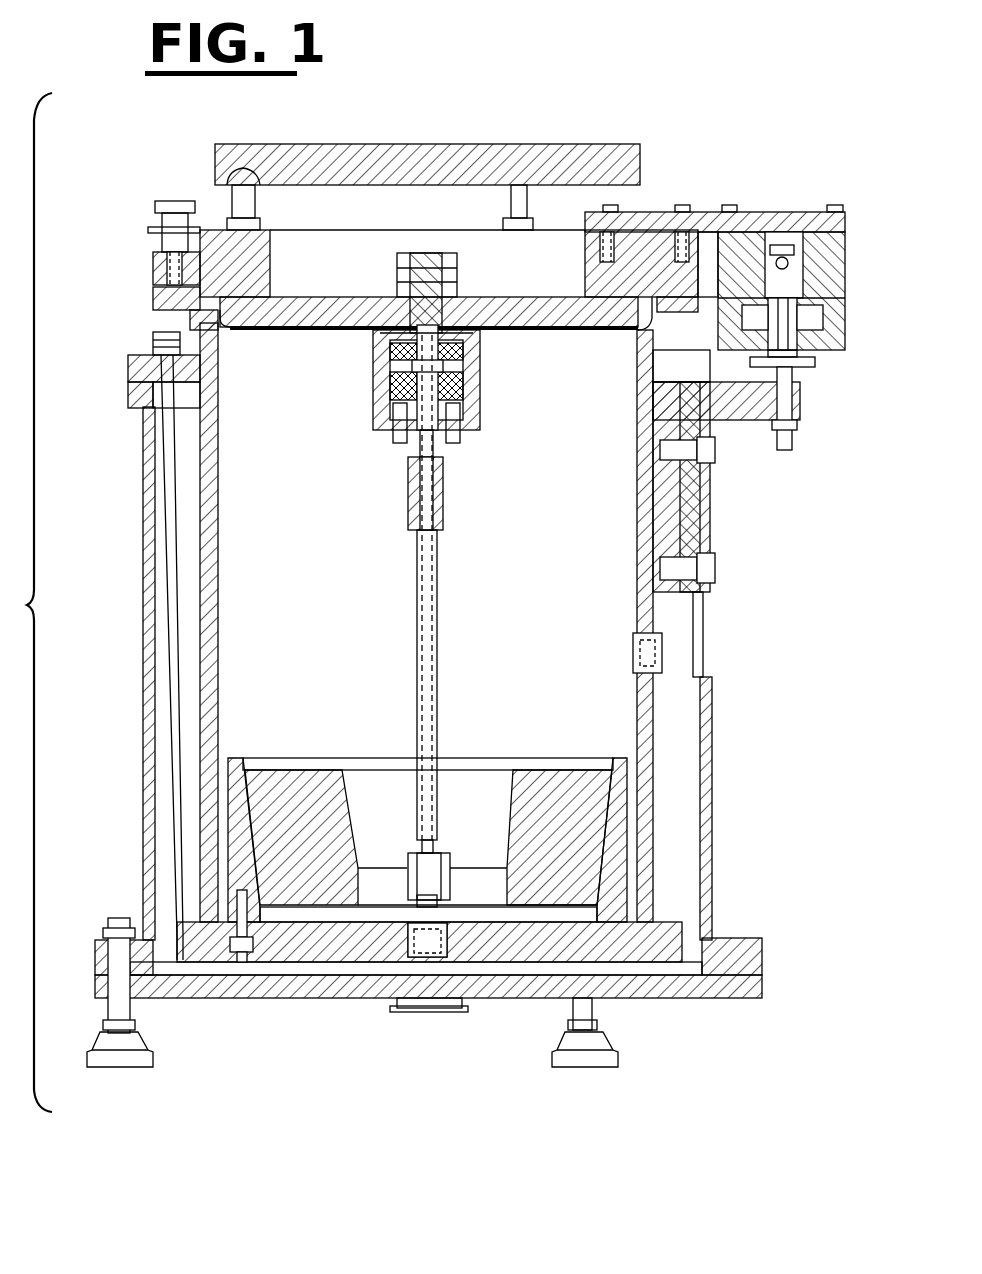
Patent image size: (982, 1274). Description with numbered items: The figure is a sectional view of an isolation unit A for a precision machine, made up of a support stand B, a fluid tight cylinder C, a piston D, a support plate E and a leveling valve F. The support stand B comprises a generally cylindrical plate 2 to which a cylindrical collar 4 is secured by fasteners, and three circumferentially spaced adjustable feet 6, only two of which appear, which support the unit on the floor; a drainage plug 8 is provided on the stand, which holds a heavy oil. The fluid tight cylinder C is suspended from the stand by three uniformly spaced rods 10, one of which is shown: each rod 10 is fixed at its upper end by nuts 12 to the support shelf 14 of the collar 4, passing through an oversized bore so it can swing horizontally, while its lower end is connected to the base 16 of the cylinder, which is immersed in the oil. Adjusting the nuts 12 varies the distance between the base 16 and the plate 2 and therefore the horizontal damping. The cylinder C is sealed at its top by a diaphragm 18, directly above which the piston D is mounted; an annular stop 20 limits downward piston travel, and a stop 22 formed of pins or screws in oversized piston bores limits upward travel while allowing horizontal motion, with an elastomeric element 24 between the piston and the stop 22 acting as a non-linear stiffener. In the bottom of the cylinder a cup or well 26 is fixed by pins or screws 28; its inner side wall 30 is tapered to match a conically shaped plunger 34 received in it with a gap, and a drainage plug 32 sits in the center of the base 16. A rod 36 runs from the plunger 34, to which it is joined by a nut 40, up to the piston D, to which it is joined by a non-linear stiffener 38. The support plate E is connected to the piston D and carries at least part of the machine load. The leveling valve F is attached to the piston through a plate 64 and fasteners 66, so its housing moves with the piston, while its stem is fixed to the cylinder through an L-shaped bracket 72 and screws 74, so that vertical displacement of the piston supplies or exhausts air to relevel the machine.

The cylindrical plate 2 is at (300, 998).
The cylindrical collar 4 is at (145, 745).
The adjustable feet 6 is at (135, 1068).
The drainage plug 8 is at (446, 1012).
The rods 10 is at (185, 565).
The nuts 12 is at (160, 333).
The support shelf 14 is at (128, 372).
The base 16 is at (355, 975).
The diaphragm 18 is at (296, 332).
The stop 20 is at (152, 266).
The stop 22 is at (170, 200).
The elastomeric element 24 is at (212, 275).
The cup or well 26 is at (242, 770).
The pins or screws 28 is at (240, 962).
The inner side wall 30 is at (598, 765).
The drainage plug 32 is at (450, 922).
The plunger 34 is at (352, 768).
The rod 36 is at (440, 645).
The non-linear stiffener 38 is at (352, 438).
The nut 40 is at (410, 860).
The plate 64 is at (655, 228).
The fasteners 66 is at (607, 205).
The L-shaped bracket 72 is at (745, 420).
The screws 74 is at (714, 568).
The isolation unit A is at (31, 602).
The support stand B is at (424, 1009).
The fluid tight cylinder C is at (685, 777).
The piston D is at (426, 365).
The support plate E is at (490, 132).
The leveling valve F is at (810, 182).